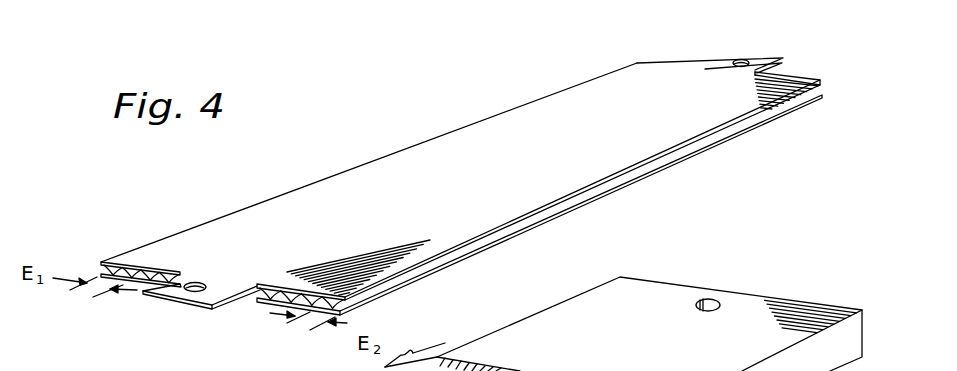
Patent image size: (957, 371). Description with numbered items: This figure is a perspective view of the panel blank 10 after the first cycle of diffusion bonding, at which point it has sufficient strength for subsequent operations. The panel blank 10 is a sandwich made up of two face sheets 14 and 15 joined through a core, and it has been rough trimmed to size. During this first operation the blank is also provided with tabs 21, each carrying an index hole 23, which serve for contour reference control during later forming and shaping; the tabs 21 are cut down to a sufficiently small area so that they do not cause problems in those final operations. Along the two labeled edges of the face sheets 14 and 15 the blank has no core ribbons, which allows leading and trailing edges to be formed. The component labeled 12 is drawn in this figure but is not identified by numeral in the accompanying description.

The panel blank 10 is at (410, 133).
The core 12 is at (272, 292).
The face sheet 14 is at (369, 180).
The face sheet 15 is at (657, 172).
The tab 21 is at (143, 292).
The index hole 23 is at (183, 283).